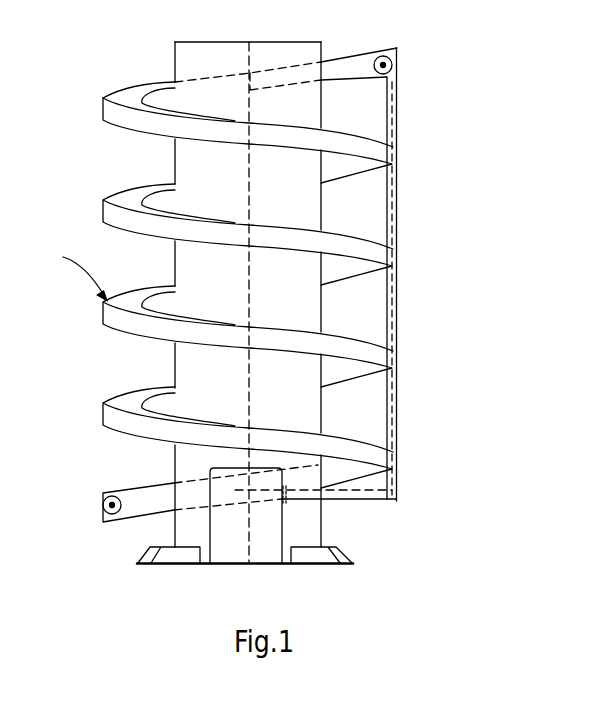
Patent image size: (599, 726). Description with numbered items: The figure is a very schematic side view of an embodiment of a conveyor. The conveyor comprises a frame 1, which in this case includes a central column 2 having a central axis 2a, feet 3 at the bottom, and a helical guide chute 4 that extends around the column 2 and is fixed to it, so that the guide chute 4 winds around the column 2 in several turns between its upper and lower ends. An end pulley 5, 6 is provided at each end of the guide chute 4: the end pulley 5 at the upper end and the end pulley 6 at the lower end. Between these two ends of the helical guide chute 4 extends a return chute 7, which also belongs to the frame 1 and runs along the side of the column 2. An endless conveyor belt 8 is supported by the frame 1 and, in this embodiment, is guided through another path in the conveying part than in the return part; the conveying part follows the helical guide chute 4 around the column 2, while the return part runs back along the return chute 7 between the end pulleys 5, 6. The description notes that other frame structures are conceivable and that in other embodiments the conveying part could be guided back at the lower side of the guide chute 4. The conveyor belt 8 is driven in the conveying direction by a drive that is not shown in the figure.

The frame 1 is at (352, 39).
The central column 2 is at (188, 62).
The central axis 2a is at (249, 205).
The feet 3 is at (148, 550).
The helical guide chute 4 is at (103, 111).
The end pulley 5 is at (392, 64).
The end pulley 6 is at (101, 496).
The return chute 7 is at (398, 118).
The endless conveyor belt 8 is at (75, 271).